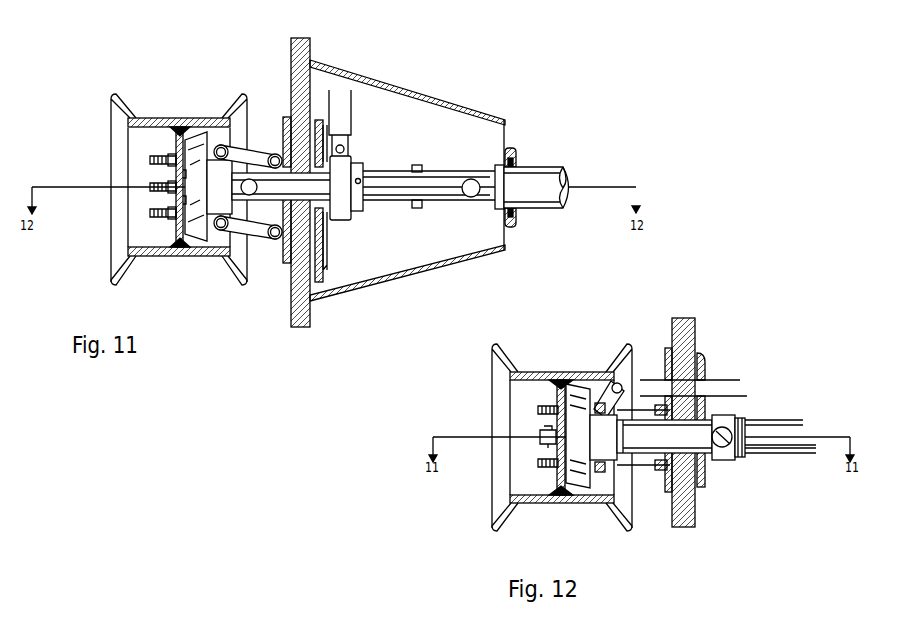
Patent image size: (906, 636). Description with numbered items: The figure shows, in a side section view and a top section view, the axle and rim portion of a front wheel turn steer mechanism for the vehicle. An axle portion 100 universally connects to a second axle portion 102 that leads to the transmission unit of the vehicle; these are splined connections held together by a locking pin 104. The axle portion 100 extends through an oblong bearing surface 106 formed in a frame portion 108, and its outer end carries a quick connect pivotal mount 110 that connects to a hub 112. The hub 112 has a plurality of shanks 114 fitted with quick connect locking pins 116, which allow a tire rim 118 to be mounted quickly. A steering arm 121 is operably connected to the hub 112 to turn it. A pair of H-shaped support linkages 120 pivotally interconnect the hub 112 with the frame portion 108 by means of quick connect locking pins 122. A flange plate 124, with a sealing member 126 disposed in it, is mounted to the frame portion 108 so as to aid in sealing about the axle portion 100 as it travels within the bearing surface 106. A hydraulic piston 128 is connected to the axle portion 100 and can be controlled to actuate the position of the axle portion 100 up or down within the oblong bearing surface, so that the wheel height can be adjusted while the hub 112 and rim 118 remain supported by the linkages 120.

In FIG. 11, the axle portion 100 is at (393, 146).
In FIG. 11, the axle portion 102 is at (437, 170).
In FIG. 11, the locking pin 104 is at (418, 165).
In FIG. 11, the oblong bearing surface 106 is at (290, 153).
In FIG. 12, the oblong bearing surface 106 is at (662, 380).
In FIG. 11, the frame portion 108 is at (293, 58).
In FIG. 12, the frame portion 108 is at (672, 328).
In FIG. 11, the quick connect pivotal mount 110 is at (245, 203).
In FIG. 12, the quick connect pivotal mount 110 is at (637, 460).
In FIG. 11, the hub 112 is at (193, 168).
In FIG. 12, the hub 112 is at (595, 430).
In FIG. 11, the shanks 114 is at (158, 160).
In FIG. 11, the quick connect locking pins 116 is at (163, 200).
In FIG. 11, the tire rim 118 is at (124, 100).
In FIG. 11, the H-shaped support linkages 120 is at (233, 147).
In FIG. 12, the H-shaped support linkages 120 is at (625, 470).
In FIG. 12, the steering arm 121 is at (720, 387).
In FIG. 11, the quick connect locking pins 122 is at (217, 233).
In FIG. 11, the flange plate 124 is at (330, 230).
In FIG. 11, the sealing member 126 is at (330, 253).
In FIG. 11, the hydraulic piston 128 is at (340, 98).
In FIG. 12, the hydraulic piston 128 is at (742, 460).